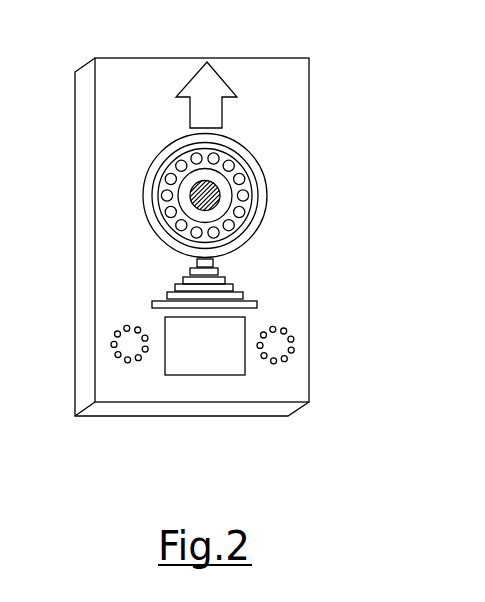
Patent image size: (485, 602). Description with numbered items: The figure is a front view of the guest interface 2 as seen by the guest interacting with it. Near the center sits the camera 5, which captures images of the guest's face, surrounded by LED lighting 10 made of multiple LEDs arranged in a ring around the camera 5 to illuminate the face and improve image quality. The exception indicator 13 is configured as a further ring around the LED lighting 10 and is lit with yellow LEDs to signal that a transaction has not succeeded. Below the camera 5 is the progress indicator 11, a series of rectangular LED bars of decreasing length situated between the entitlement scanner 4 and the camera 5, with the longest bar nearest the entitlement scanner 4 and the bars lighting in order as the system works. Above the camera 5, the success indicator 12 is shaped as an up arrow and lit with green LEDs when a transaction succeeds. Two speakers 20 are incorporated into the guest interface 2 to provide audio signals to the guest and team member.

The guest interface 2 is at (285, 67).
The entitlement scanner 4 is at (233, 340).
The camera 5 is at (217, 192).
The LED lighting 10 is at (240, 208).
The progress indicator 11 is at (238, 256).
The success indicator 12 is at (197, 85).
The exception indicator 13 is at (248, 160).
The speakers 20 is at (280, 363).